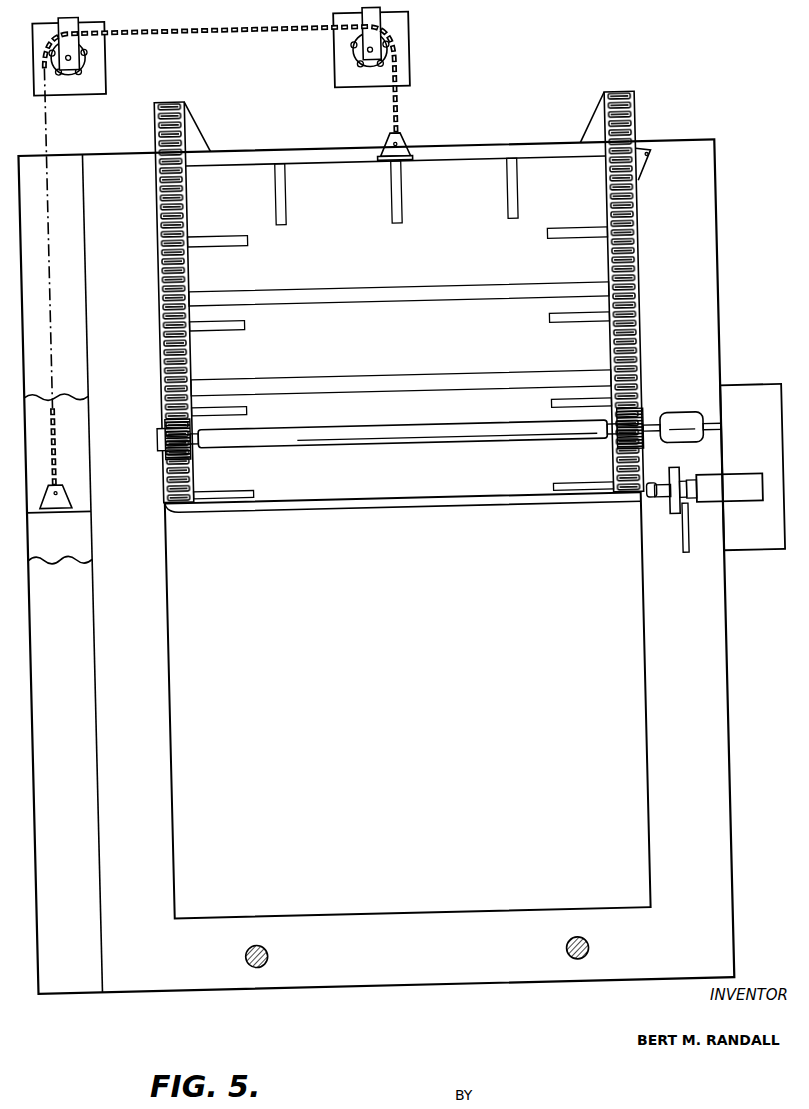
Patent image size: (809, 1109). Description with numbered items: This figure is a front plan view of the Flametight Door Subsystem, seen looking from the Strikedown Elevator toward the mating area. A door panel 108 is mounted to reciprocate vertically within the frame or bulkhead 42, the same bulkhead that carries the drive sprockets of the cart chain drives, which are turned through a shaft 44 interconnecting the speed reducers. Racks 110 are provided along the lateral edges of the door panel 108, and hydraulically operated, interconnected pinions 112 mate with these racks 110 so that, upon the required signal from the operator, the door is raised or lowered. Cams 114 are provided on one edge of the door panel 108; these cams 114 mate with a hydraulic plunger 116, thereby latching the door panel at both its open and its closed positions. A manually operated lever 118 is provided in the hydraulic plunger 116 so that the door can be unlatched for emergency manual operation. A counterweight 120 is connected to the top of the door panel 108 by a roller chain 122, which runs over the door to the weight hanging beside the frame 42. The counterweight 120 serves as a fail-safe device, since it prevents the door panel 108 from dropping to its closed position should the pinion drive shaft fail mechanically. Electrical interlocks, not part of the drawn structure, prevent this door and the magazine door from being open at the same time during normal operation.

The frame or bulkhead 42 is at (713, 657).
The shaft 44 is at (266, 953).
The door panel 108 is at (417, 271).
The racks 110 is at (158, 260).
The pinions 112 is at (160, 422).
The cams 114 is at (645, 152).
The hydraulic plunger 116 is at (660, 500).
The manually operated lever 118 is at (685, 553).
The counterweight 120 is at (88, 545).
The roller chain 122 is at (200, 36).